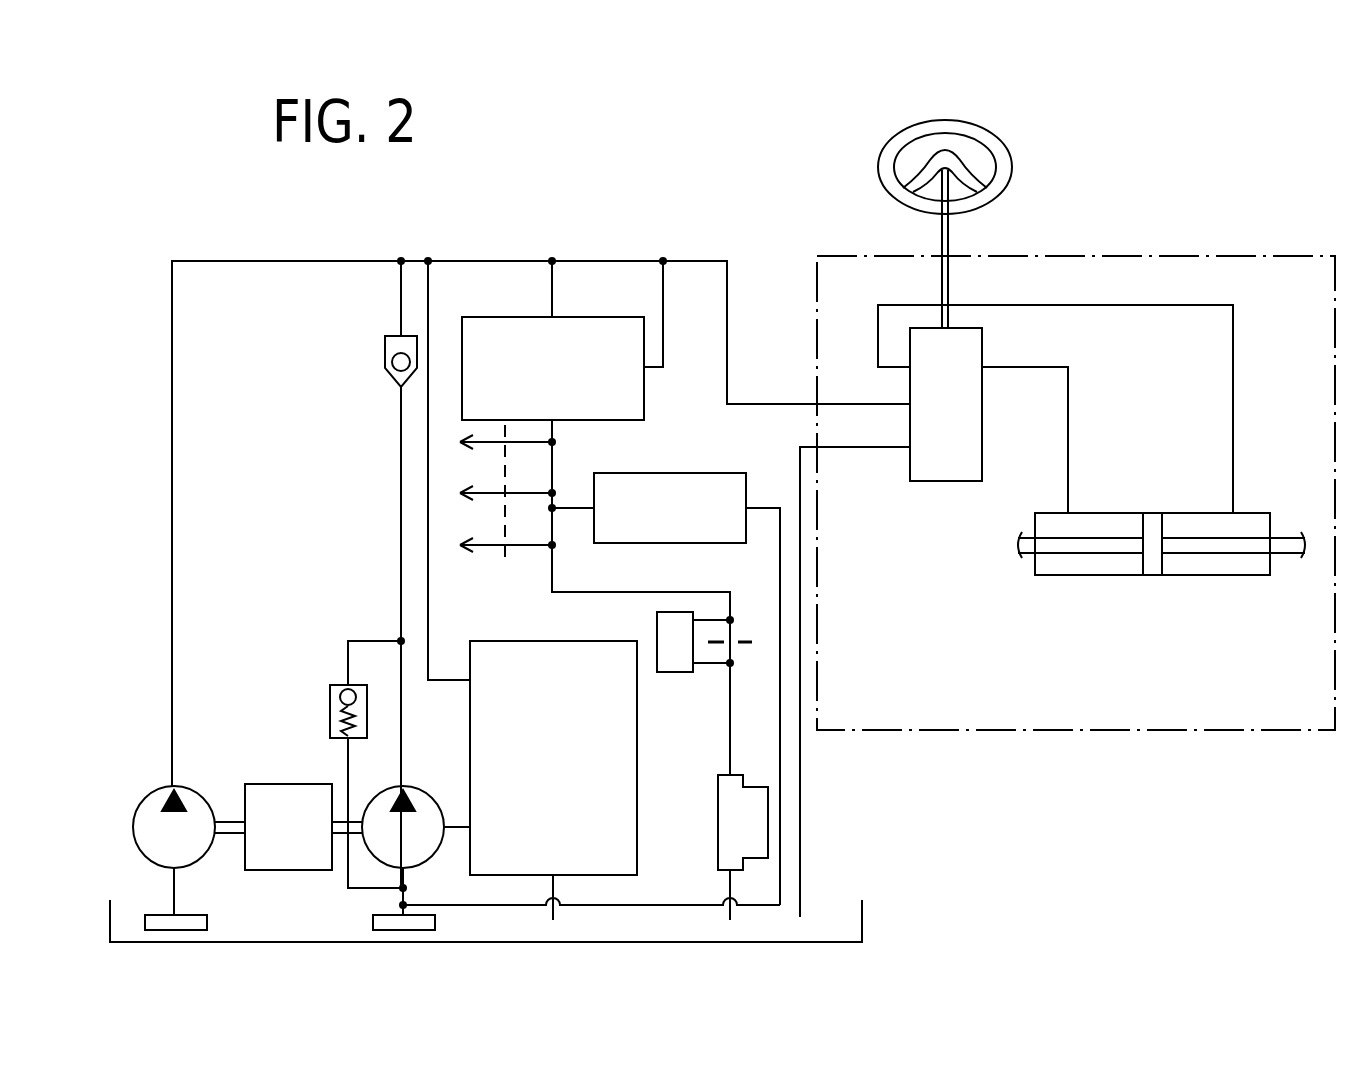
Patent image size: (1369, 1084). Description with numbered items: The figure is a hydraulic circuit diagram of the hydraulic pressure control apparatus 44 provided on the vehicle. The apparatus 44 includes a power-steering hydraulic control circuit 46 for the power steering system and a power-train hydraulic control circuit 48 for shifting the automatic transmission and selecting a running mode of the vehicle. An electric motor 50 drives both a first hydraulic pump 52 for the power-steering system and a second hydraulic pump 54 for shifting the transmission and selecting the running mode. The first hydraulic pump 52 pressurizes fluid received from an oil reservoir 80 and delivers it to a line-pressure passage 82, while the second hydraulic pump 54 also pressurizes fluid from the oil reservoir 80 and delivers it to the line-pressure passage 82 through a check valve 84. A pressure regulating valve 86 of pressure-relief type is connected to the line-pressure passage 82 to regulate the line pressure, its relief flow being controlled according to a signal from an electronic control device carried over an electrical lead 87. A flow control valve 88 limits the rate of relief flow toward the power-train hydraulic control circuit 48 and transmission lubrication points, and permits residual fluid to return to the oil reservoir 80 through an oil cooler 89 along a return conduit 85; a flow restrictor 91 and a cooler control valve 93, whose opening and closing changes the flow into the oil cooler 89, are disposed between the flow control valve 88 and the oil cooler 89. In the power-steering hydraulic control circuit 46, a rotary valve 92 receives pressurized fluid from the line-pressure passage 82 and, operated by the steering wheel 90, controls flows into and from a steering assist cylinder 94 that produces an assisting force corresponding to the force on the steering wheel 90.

The hydraulic pressure control apparatus 44 is at (1233, 212).
The power-steering hydraulic control circuit 46 is at (1093, 731).
The power-train hydraulic control circuit 48 is at (480, 641).
The electric motor 50 is at (262, 870).
The first hydraulic pump 52 is at (142, 812).
The second hydraulic pump 54 is at (425, 805).
The oil reservoir 80 is at (865, 917).
The line-pressure passage 82 is at (263, 261).
The check valve 84 is at (385, 345).
The return conduit 85 is at (762, 504).
The pressure regulating valve 86 is at (507, 330).
The electrical lead 87 is at (600, 592).
The flow control valve 88 is at (668, 483).
The oil cooler 89 is at (722, 795).
The steering wheel 90 is at (1005, 172).
The flow restrictor 91 is at (750, 642).
The rotary valve 92 is at (927, 483).
The cooler control valve 93 is at (678, 672).
The steering assist cylinder 94 is at (1088, 576).